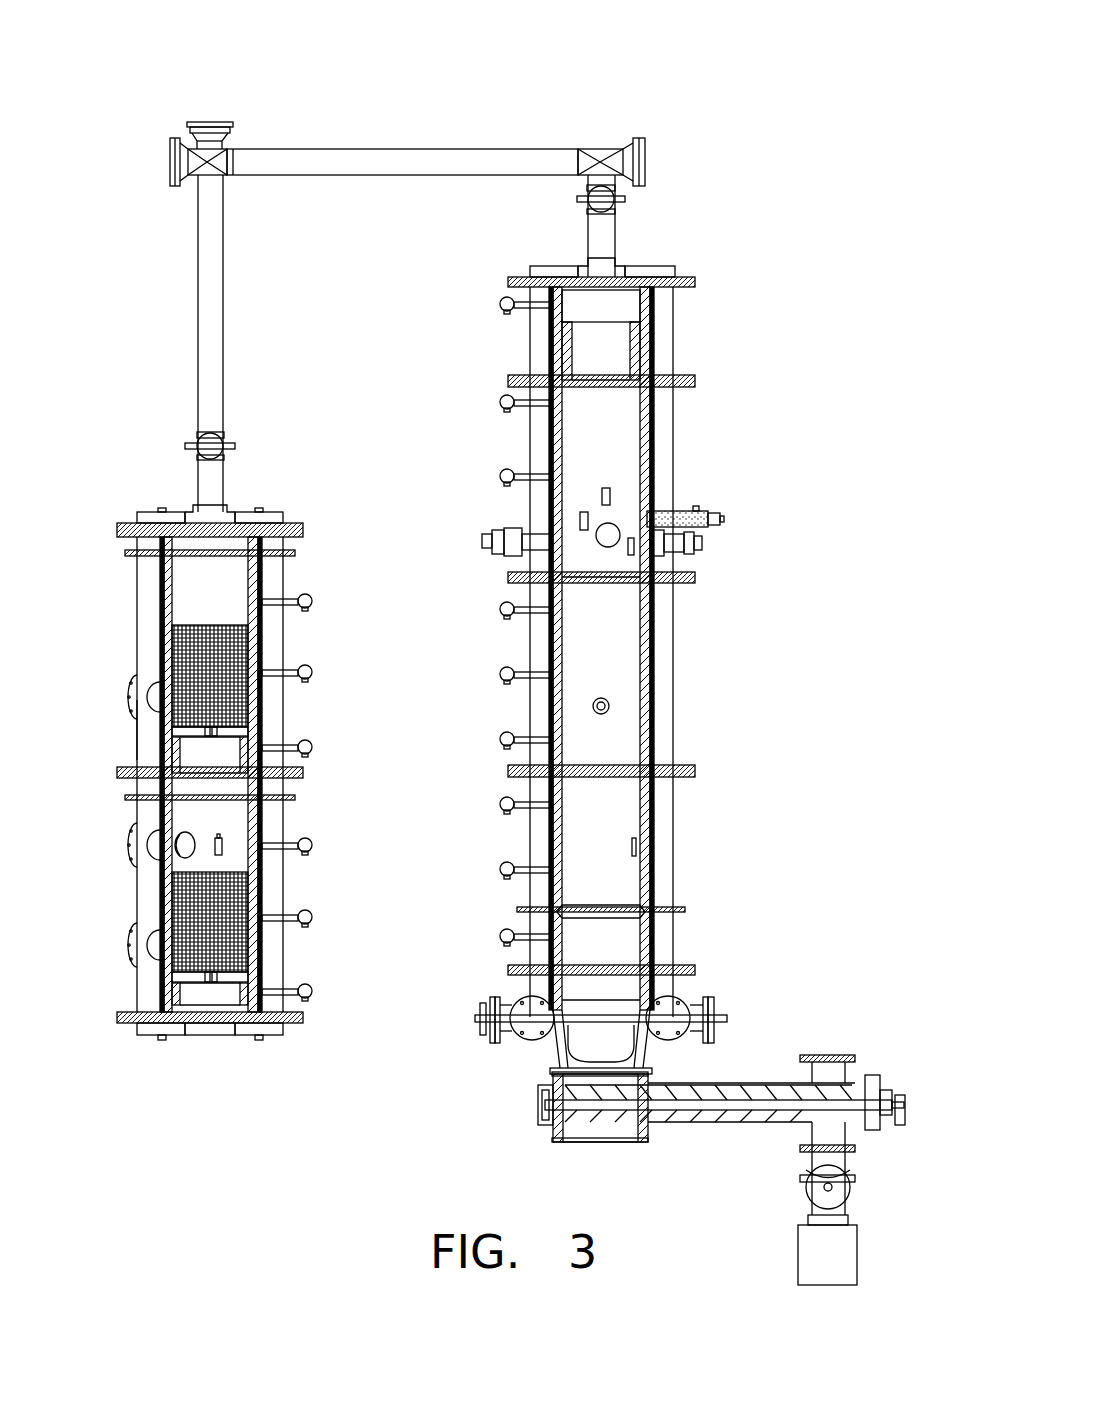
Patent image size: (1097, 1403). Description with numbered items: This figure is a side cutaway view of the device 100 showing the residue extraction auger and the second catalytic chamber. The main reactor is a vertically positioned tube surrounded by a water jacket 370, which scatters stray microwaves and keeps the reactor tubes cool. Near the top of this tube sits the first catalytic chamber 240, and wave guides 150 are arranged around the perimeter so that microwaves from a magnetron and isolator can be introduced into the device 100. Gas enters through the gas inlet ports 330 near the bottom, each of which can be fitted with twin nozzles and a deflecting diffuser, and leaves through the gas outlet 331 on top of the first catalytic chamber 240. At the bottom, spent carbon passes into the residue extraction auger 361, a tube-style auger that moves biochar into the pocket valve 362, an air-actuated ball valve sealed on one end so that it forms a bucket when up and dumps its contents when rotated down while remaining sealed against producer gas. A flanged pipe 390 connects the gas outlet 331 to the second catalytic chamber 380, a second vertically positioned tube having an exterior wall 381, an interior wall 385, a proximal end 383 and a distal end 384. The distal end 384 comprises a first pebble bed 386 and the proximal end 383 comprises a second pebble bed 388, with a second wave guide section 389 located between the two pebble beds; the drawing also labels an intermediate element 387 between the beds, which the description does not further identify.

The device 100 is at (168, 72).
The wave guide 150 is at (683, 510).
The first catalytic chamber 240 is at (612, 356).
The gas inlet ports 330 is at (565, 985).
The gas outlet 331 is at (600, 268).
The residue extraction auger 361 is at (660, 1115).
The pocket valve 362 is at (855, 1190).
The water jacket 370 is at (540, 460).
The second catalytic chamber 380 is at (138, 495).
The exterior wall 381 is at (136, 733).
The proximal end 383 is at (280, 1042).
The distal end 384 is at (265, 512).
The interior wall 385 is at (158, 660).
The first pebble bed 386 is at (258, 656).
The spacer 387 is at (220, 782).
The second pebble bed 388 is at (258, 880).
The second wave guide section 389 is at (215, 835).
The flanged pipe 390 is at (356, 177).